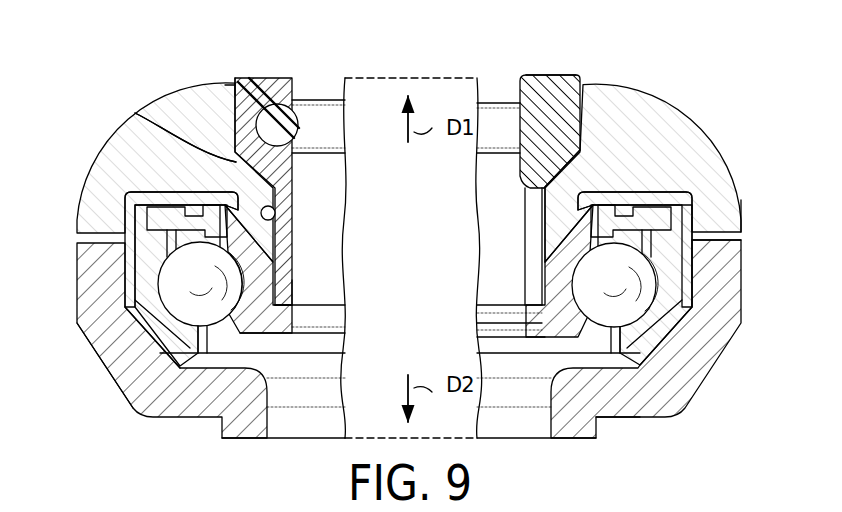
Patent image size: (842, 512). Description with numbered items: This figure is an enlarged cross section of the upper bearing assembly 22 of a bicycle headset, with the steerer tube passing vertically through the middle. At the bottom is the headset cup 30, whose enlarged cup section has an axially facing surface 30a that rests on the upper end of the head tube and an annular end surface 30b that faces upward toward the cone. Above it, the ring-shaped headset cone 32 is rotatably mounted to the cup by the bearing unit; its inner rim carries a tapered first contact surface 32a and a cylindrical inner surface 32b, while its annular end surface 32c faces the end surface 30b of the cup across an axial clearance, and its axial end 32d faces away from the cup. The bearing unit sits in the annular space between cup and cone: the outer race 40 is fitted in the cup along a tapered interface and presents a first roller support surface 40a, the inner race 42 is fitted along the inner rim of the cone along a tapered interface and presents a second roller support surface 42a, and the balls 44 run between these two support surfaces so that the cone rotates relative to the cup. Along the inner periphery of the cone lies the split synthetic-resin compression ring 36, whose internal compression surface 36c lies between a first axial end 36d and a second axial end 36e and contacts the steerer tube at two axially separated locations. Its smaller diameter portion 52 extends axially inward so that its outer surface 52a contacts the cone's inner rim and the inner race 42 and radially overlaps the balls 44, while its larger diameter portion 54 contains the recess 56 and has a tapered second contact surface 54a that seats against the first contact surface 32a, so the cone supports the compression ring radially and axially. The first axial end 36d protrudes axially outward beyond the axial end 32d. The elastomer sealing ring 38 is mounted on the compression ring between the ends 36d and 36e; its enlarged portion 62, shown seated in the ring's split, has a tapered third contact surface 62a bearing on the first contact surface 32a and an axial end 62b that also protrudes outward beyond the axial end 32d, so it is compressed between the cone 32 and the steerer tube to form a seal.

The upper bearing assembly 22 is at (714, 99).
The headset cup 30 is at (714, 370).
The axially facing surface 30a is at (617, 420).
The annular end surface 30b is at (712, 242).
The headset cone 32 is at (80, 180).
The first contact surface 32a is at (520, 174).
The cylindrical inner surface 32b is at (525, 233).
The annular end surface 32c is at (742, 230).
The axial end 32d is at (226, 82).
The compression ring 36 is at (277, 74).
The internal compression surface 36c is at (294, 289).
The first axial end 36d is at (236, 76).
The second axial end 36e is at (270, 315).
The sealing ring 38 is at (318, 95).
The outer race 40 is at (117, 297).
The first roller support surface 40a is at (150, 340).
The inner race 42 is at (265, 316).
The second roller support surface 42a is at (205, 322).
The balls 44 is at (197, 282).
The smaller diameter portion 52 is at (293, 258).
The outer surface 52a is at (276, 213).
The larger diameter portion 54 is at (265, 88).
The second contact surface 54a is at (135, 113).
The recess 56 is at (298, 132).
The enlarged portion 62 is at (522, 88).
The third contact surface 62a is at (586, 166).
The axial end 62b is at (556, 76).